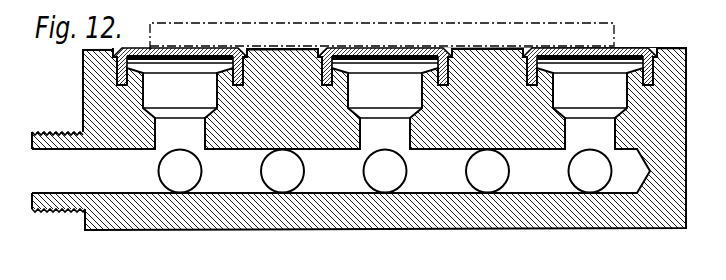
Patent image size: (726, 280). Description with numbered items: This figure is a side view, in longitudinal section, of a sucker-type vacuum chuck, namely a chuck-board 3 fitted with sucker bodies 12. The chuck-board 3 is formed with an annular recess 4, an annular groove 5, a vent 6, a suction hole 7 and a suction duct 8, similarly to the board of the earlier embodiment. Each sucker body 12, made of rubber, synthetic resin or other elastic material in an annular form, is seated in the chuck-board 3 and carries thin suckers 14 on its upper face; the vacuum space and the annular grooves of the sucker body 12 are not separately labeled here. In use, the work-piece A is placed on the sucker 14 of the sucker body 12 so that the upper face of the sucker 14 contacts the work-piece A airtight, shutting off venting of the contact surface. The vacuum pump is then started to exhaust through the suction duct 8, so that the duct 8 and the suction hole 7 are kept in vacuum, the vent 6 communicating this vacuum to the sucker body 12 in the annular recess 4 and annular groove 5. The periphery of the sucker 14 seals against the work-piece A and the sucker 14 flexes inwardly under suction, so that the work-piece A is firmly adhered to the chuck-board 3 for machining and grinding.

The chuck-board 3 is at (300, 213).
The annular recess 4 is at (110, 51).
The annular groove 5 is at (114, 73).
The vent 6 is at (143, 95).
The suction hole 7 is at (128, 190).
The suction duct 8 is at (43, 212).
The sucker body 12 is at (250, 61).
The sucker 14 is at (190, 52).
The work-piece A is at (322, 23).